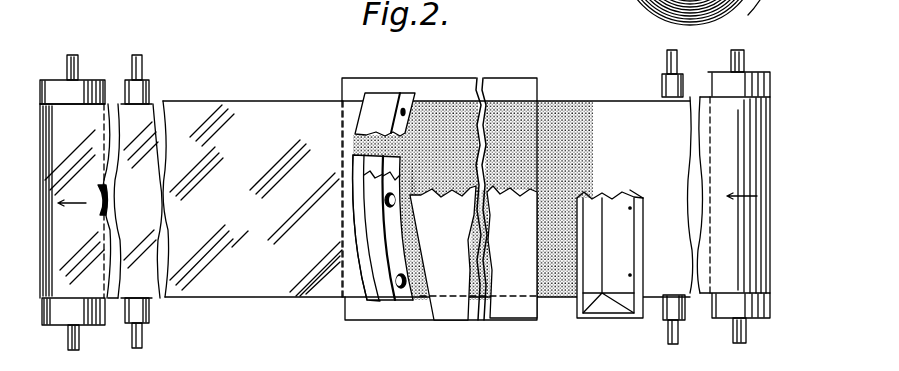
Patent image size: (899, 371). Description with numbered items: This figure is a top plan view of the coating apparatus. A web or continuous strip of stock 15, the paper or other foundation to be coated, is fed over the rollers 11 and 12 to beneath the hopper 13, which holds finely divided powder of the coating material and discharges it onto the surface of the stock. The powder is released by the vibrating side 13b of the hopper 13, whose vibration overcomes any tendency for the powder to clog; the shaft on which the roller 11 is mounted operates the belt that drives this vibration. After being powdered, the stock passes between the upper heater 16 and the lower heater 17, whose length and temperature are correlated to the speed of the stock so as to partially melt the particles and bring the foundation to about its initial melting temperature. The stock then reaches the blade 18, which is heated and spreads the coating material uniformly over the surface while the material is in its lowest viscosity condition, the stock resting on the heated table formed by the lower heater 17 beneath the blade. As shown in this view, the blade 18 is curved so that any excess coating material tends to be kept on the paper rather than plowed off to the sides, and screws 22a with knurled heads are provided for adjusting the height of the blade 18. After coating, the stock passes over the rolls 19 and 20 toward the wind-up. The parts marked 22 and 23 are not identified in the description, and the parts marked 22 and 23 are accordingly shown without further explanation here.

The roller 11 is at (750, 305).
The roller 12 is at (677, 307).
The hopper 13 is at (610, 310).
The vibrating side 13b is at (620, 196).
The web or continuous strip of stock 15 is at (242, 270).
The upper heater 16 is at (518, 267).
The lower heater 17 is at (455, 95).
The blade 18 is at (356, 200).
The roll 19 is at (149, 86).
The roll 20 is at (75, 95).
The small rollers 22 is at (394, 204).
The screws 22a is at (403, 108).
The guide strip 23 is at (378, 245).